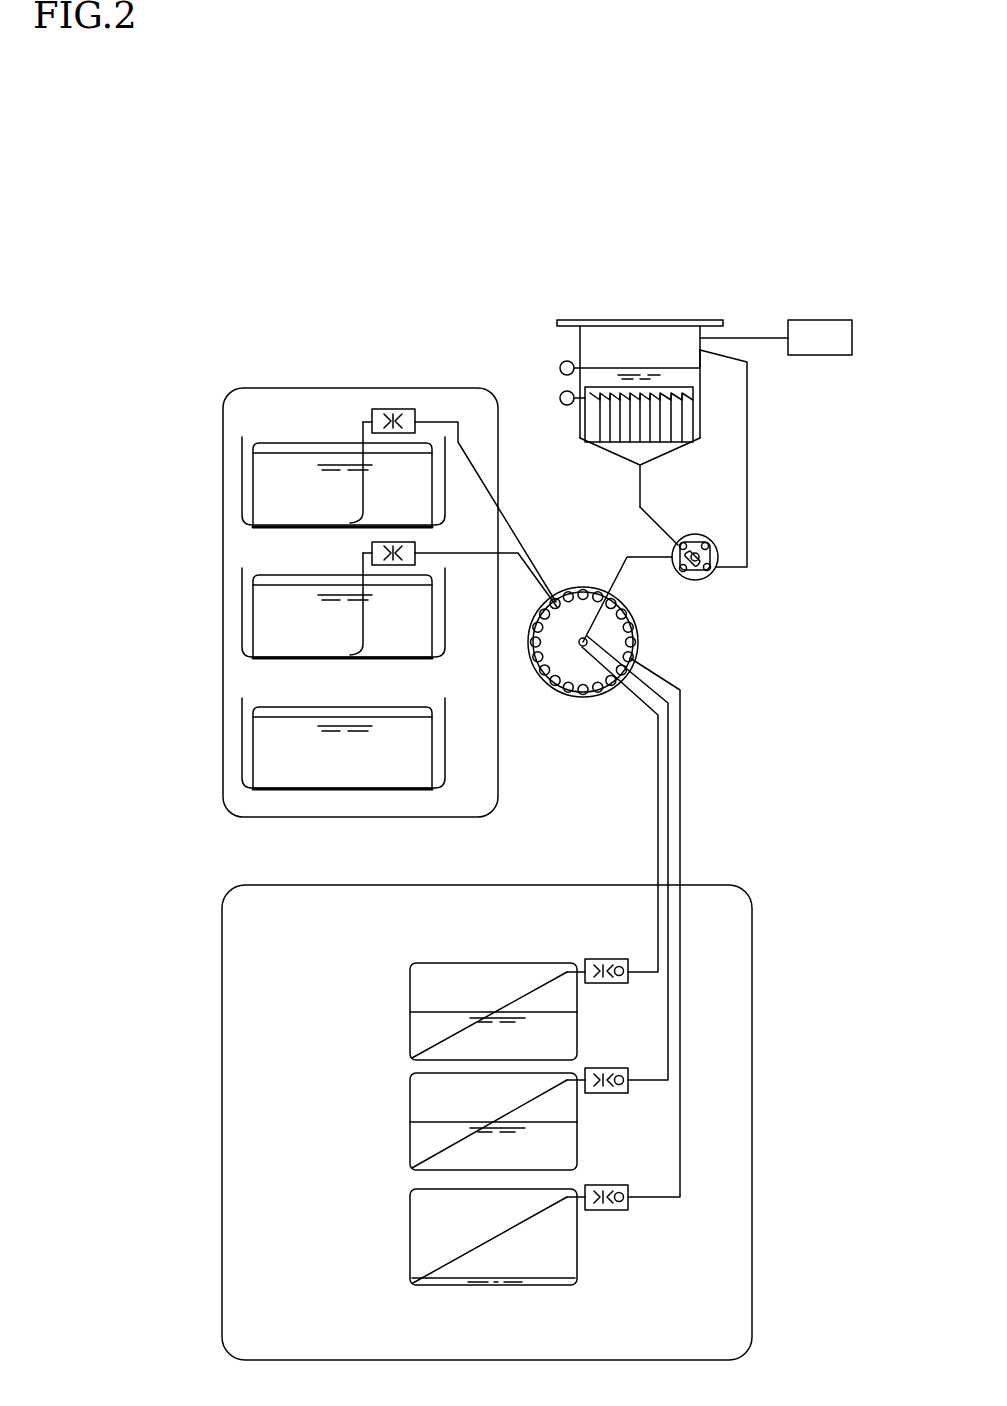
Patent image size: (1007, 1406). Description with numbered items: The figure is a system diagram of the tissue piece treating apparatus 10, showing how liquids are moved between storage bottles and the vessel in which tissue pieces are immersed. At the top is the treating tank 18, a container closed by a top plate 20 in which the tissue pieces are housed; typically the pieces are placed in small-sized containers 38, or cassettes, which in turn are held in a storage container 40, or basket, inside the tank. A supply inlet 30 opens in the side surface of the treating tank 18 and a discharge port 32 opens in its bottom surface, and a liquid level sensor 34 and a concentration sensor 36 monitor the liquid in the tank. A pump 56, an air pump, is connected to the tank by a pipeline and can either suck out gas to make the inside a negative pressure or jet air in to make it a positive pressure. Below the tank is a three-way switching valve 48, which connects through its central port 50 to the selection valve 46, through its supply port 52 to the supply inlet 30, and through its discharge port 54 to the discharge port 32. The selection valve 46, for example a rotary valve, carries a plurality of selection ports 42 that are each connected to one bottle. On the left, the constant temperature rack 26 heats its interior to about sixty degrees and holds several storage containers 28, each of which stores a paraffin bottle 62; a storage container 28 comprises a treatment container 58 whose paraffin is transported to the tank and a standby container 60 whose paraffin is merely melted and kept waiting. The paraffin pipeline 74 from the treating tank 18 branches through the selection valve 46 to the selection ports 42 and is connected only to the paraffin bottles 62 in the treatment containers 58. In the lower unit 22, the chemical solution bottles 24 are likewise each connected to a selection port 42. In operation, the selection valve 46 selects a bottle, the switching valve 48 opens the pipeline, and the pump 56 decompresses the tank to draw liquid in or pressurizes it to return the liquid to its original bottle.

The tissue piece treating apparatus 10 is at (625, 219).
The treating tank 18 is at (580, 354).
The top plate 20 is at (718, 322).
The second storage unit 22 is at (222, 927).
The chemical solution bottle 24 is at (408, 985).
The constant temperature rack 26 is at (267, 390).
The storage container 28 is at (270, 599).
The supply inlet 30 is at (702, 360).
The discharge port 32 is at (638, 465).
The liquid level sensor 34 is at (560, 368).
The concentration sensor 36 is at (560, 398).
The small-sized container 38 is at (580, 438).
The storage container 40 is at (585, 416).
The selection port 42 is at (433, 417).
The selection valve 46 is at (637, 630).
The switching valve 48 is at (688, 532).
The central port 50 is at (618, 575).
The supply port 52 is at (747, 437).
The discharge port 54 is at (643, 510).
The pump 56 is at (830, 320).
The treatment container 58 is at (240, 455).
The standby container 60 is at (240, 712).
The paraffin bottle 62 is at (242, 470).
The paraffin pipeline 74 is at (468, 344).